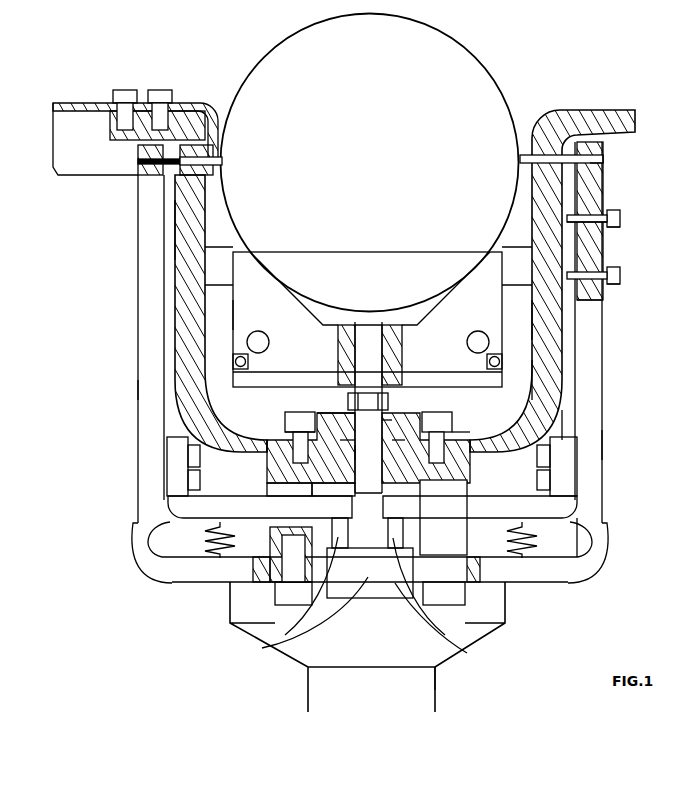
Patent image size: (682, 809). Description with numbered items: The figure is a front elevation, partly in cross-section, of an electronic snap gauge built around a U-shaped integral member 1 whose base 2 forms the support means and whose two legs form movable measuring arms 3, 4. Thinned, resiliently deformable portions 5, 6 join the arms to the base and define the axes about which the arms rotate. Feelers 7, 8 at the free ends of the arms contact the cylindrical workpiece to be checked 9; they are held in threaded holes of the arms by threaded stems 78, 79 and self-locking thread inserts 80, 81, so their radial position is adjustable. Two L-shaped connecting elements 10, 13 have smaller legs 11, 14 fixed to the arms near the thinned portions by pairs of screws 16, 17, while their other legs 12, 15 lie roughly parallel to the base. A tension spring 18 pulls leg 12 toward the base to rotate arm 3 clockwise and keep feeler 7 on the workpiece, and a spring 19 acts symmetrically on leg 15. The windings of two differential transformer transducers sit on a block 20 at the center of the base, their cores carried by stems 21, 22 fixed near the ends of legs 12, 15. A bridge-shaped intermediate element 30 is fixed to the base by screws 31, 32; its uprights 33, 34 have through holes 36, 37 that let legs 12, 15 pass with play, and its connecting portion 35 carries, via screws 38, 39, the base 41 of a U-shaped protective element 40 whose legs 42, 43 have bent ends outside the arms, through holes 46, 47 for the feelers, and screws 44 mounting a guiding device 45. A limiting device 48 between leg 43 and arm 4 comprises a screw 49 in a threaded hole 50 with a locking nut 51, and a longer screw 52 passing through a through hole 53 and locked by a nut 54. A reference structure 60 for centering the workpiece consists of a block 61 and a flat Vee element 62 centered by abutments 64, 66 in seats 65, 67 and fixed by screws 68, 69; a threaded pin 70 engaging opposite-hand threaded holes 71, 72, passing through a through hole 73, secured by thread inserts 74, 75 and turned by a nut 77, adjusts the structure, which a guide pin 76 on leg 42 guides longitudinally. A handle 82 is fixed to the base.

The integral member 1 is at (138, 393).
The base 2 is at (450, 535).
The movable measuring arm 3 is at (148, 378).
The movable measuring arm 4 is at (603, 440).
The reduced portion 5 is at (136, 538).
The reduced portion 6 is at (600, 532).
The feeler 7 is at (218, 150).
The feeler 8 is at (526, 155).
The workpiece to be checked 9 is at (462, 74).
The connecting element 10 is at (160, 548).
The smaller leg 11 is at (182, 490).
The leg 12 is at (215, 540).
The connecting element 13 is at (598, 560).
The smaller leg 14 is at (580, 490).
The leg 15 is at (577, 540).
The screws 16 is at (194, 480).
The screws 17 is at (550, 482).
The tension spring 18 is at (262, 560).
The spring 19 is at (522, 540).
The block 20 is at (300, 642).
The stem 21 is at (285, 627).
The stem 22 is at (452, 623).
The intermediate element 30 is at (300, 462).
The screw 31 is at (296, 592).
The screw 32 is at (445, 595).
The upright 33 is at (294, 575).
The upright 34 is at (452, 590).
The connecting portion 35 is at (558, 420).
The through hole 36 is at (335, 545).
The through hole 37 is at (455, 540).
The screw 38 is at (290, 416).
The screw 39 is at (462, 392).
The protective element 40 is at (185, 422).
The base of protective element 41 is at (262, 415).
The leg of protective element 42 is at (190, 230).
The leg of protective element 43 is at (546, 325).
The screws 44 is at (162, 93).
The guiding device 45 is at (92, 103).
The through hole 46 is at (213, 120).
The through hole 47 is at (565, 125).
The limiting device 48 is at (604, 240).
The screw 49 is at (614, 210).
The threaded hole 50 is at (612, 228).
The locking nut 51 is at (590, 224).
The screw 52 is at (620, 274).
The through hole 53 is at (612, 284).
The nut 54 is at (600, 300).
The reference structure 60 is at (218, 268).
The block 61 is at (468, 382).
The flat Vee element 62 is at (478, 268).
The abutment 64 is at (258, 342).
The seat 65 is at (240, 362).
The abutment 66 is at (480, 345).
The seat 67 is at (545, 378).
The screw 68 is at (232, 316).
The screw 69 is at (500, 362).
The threaded pin 70 is at (352, 418).
The threaded through hole 71 is at (340, 425).
The threaded through hole 72 is at (303, 425).
The through hole 73 is at (436, 422).
The right thread insert 74 is at (362, 432).
The left thread insert 75 is at (402, 432).
The guide pin 76 is at (232, 256).
The nut 77 is at (392, 422).
The threaded stem 78 is at (150, 163).
The threaded stem 79 is at (605, 160).
The self-locking thread insert 80 is at (175, 165).
The self-locking thread insert 81 is at (604, 170).
The handle 82 is at (440, 640).